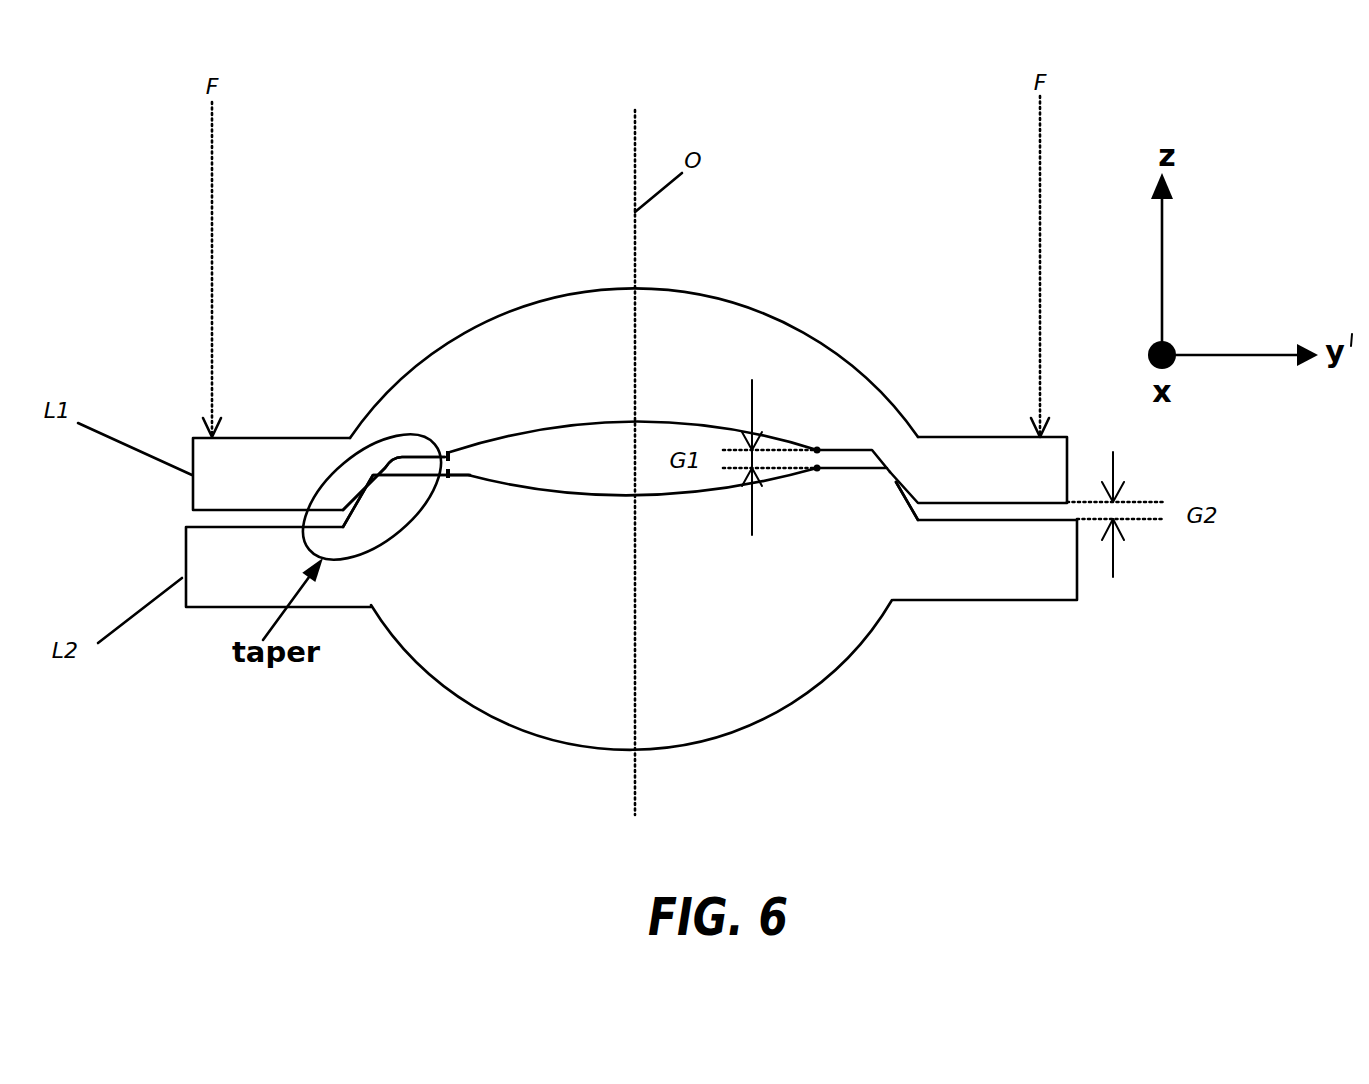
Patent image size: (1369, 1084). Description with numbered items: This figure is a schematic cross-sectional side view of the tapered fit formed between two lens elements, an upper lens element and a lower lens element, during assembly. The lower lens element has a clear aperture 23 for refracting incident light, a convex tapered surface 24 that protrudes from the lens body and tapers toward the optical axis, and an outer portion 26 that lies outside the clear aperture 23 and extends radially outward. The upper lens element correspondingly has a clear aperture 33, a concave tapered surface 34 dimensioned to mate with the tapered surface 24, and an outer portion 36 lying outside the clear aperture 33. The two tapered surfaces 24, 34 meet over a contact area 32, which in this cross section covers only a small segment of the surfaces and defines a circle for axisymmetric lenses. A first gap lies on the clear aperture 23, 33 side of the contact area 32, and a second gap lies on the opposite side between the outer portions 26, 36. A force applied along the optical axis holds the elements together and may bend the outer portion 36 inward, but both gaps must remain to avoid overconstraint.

The clear aperture 23 is at (502, 310).
The clear aperture 33 is at (558, 743).
The contact area 32 is at (373, 476).
The tapered surface 34 is at (890, 472).
The outer portion 36 is at (965, 437).
The outer portion 26 is at (1055, 598).
The tapered surface 24 is at (902, 505).